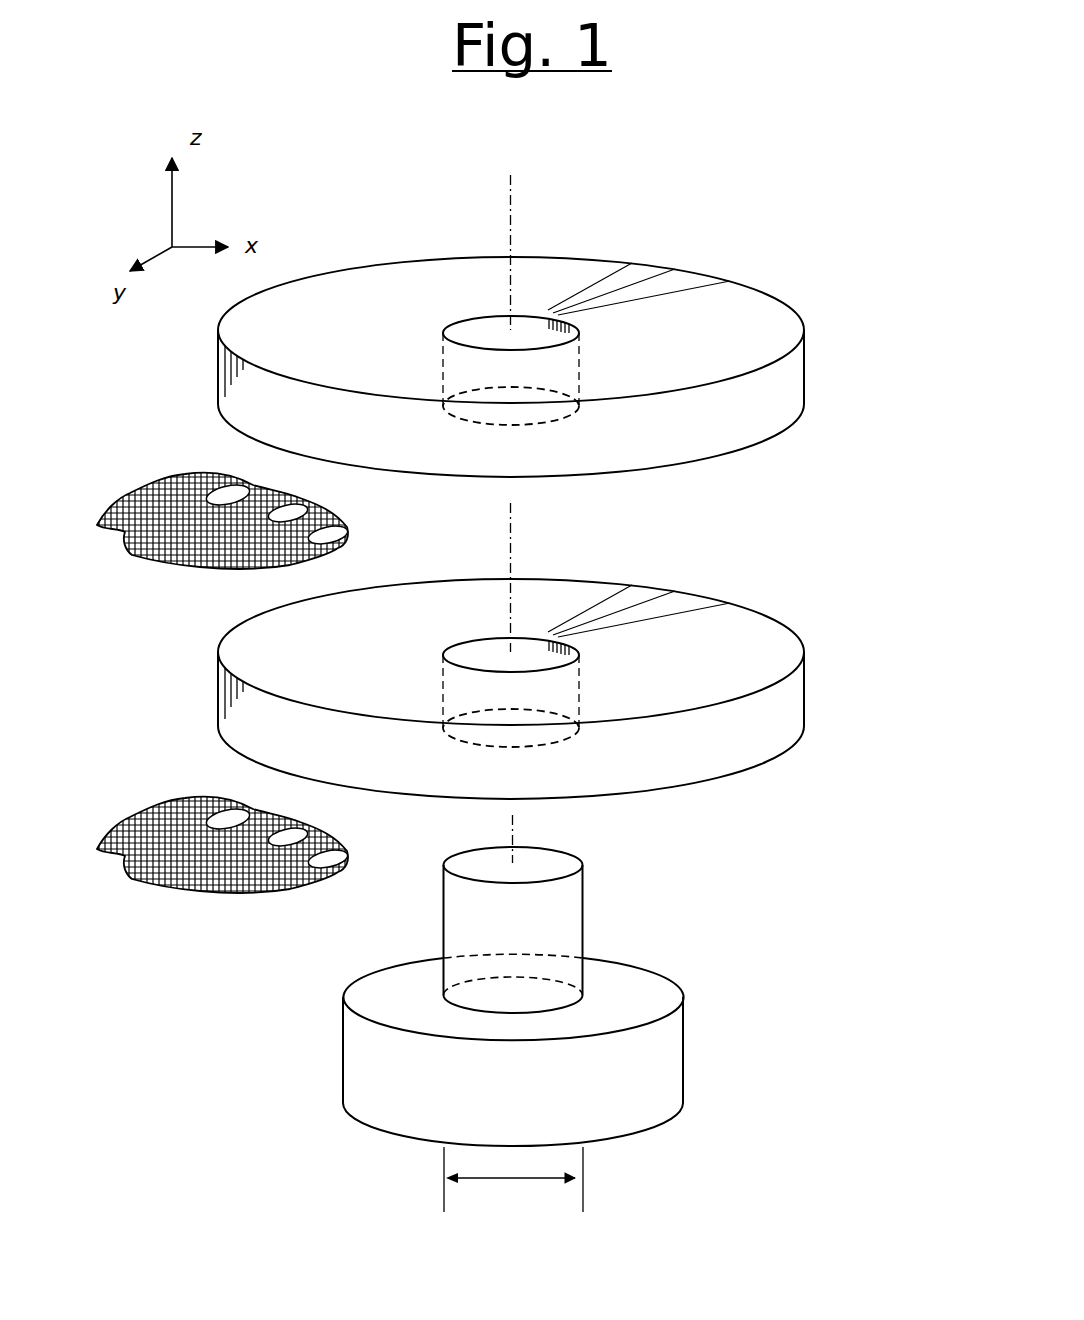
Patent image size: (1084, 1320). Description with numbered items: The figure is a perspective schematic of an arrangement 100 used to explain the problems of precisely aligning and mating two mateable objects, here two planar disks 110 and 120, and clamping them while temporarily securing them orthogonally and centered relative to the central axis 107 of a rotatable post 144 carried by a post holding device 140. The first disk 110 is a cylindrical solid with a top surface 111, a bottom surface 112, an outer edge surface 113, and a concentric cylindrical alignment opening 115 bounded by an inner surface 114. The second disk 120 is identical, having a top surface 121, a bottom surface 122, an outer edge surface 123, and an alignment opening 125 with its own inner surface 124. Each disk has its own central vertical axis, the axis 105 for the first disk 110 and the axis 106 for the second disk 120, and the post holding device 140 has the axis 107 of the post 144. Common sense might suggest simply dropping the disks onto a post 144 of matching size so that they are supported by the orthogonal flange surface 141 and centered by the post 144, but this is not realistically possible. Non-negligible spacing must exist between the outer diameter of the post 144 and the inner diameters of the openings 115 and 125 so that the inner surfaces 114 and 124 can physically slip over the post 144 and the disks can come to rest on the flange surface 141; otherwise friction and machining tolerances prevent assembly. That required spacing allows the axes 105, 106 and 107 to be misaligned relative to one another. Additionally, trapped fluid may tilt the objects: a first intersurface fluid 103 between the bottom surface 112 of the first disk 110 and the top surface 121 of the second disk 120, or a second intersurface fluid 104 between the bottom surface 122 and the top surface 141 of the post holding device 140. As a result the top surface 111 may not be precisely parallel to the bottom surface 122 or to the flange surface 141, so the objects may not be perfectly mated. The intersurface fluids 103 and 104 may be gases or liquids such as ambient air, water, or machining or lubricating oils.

The schematic alignment arrangement 100 is at (398, 115).
The first intersurface fluid 103 is at (103, 557).
The second intersurface fluid 104 is at (103, 881).
The central vertical axis of first disk 105 is at (505, 183).
The central vertical axis of second disk 106 is at (505, 507).
The central axis of rotatable post 107 is at (508, 815).
The first disk 110 is at (805, 363).
The top surface of first disk 111 is at (753, 303).
The bottom surface of first disk 112 is at (757, 443).
The outer edge surface of first disk 113 is at (220, 378).
The inner surface of first alignment opening 114 is at (542, 321).
The alignment opening of first disk 115 is at (483, 322).
The second disk 120 is at (806, 688).
The top surface of second disk 121 is at (755, 625).
The bottom surface of second disk 122 is at (758, 768).
The outer edge surface of second disk 123 is at (222, 702).
The inner surface of second alignment opening 124 is at (542, 644).
The alignment opening of second disk 125 is at (483, 645).
The post holding device 140 is at (686, 1068).
The flange surface 141 is at (640, 985).
The rotatable post 144 is at (577, 920).